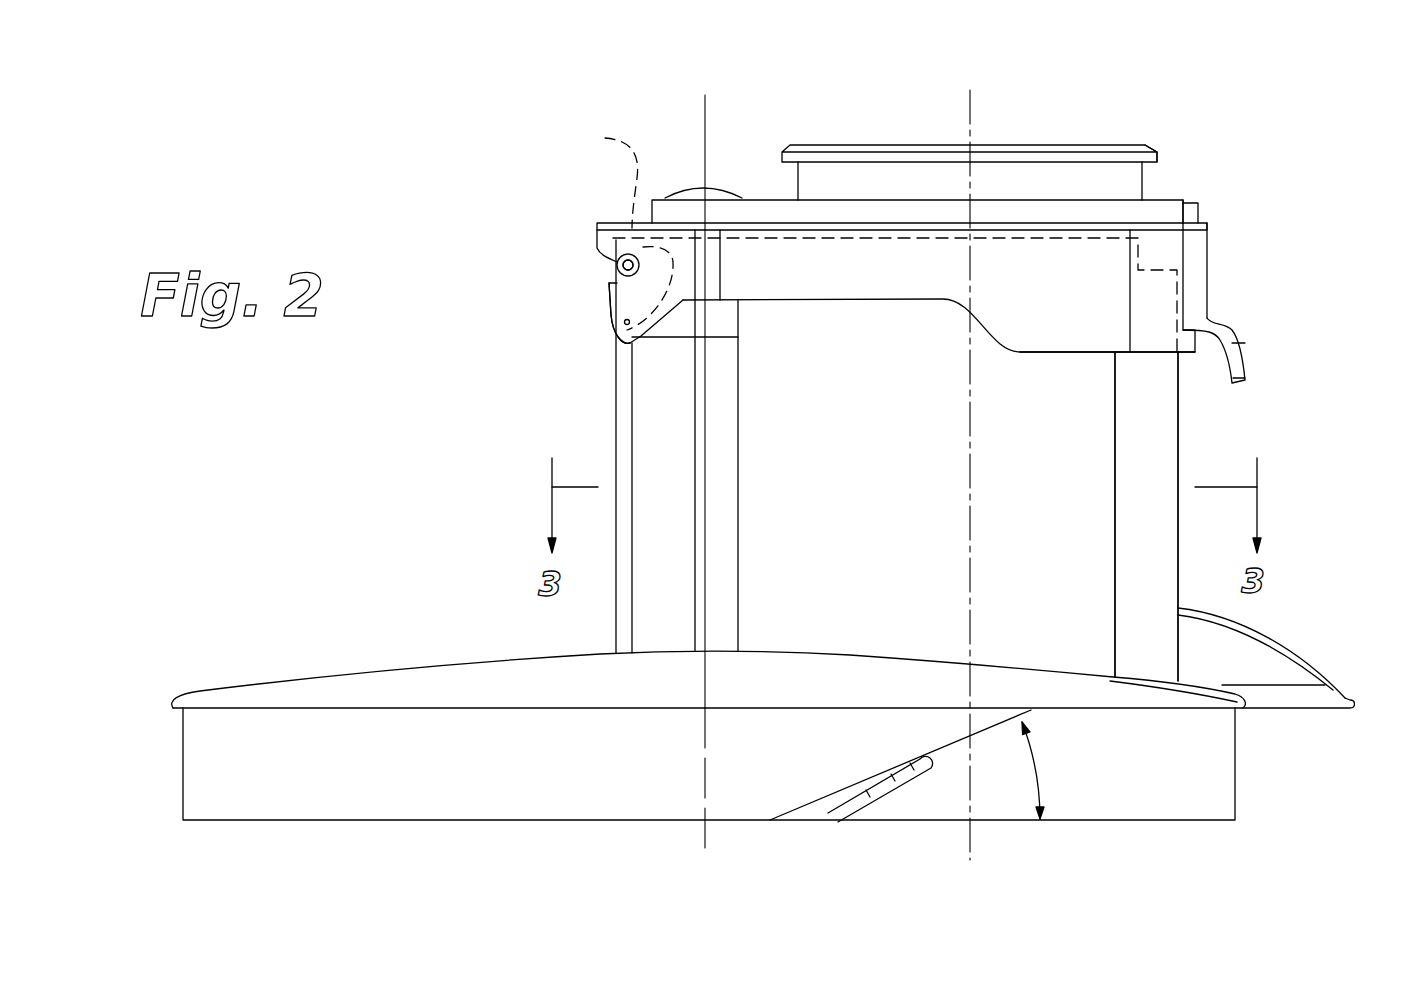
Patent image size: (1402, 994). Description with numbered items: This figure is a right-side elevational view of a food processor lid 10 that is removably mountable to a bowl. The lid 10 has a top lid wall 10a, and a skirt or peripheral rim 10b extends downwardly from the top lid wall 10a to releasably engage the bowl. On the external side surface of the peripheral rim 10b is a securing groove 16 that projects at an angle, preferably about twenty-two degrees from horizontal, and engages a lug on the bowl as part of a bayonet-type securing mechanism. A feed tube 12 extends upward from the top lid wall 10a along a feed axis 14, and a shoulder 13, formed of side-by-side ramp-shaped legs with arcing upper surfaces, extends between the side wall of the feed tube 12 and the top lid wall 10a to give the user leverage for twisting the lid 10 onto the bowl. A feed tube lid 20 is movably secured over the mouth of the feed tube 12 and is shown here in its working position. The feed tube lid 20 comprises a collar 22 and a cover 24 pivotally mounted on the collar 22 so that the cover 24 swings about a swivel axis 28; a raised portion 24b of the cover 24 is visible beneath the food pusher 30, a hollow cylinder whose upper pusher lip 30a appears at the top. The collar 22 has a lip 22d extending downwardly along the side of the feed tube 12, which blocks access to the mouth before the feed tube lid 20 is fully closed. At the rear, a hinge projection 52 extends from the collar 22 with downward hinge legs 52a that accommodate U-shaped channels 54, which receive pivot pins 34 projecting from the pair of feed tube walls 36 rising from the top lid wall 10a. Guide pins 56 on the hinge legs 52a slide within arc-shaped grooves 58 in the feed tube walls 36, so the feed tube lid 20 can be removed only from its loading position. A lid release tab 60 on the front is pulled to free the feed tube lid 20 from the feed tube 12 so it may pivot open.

The lid 10 is at (763, 693).
The top lid wall 10a is at (323, 683).
The peripheral rim 10b is at (415, 780).
The feed tube 12 is at (1153, 443).
The shoulder 13 is at (1260, 660).
The feed axis 14 is at (975, 108).
The securing groove 16 is at (861, 790).
The feed tube lid 20 is at (918, 358).
The collar 22 is at (862, 300).
The lip 22d is at (1117, 325).
The cover 24 is at (778, 212).
The plate boss 24b is at (902, 178).
The swivel axis 28 is at (703, 120).
The food pusher 30 is at (1078, 140).
The upper pusher lip 30a is at (1152, 166).
The pivot pin 34 is at (617, 265).
The feed tube walls 36 is at (652, 428).
The hinge projection 52 is at (577, 253).
The hinge legs 52a is at (613, 300).
The U-shaped channel 54 is at (617, 273).
The guide pin 56 is at (610, 337).
The arc-shaped groove 58 is at (615, 227).
The lid release tab 60 is at (1243, 347).